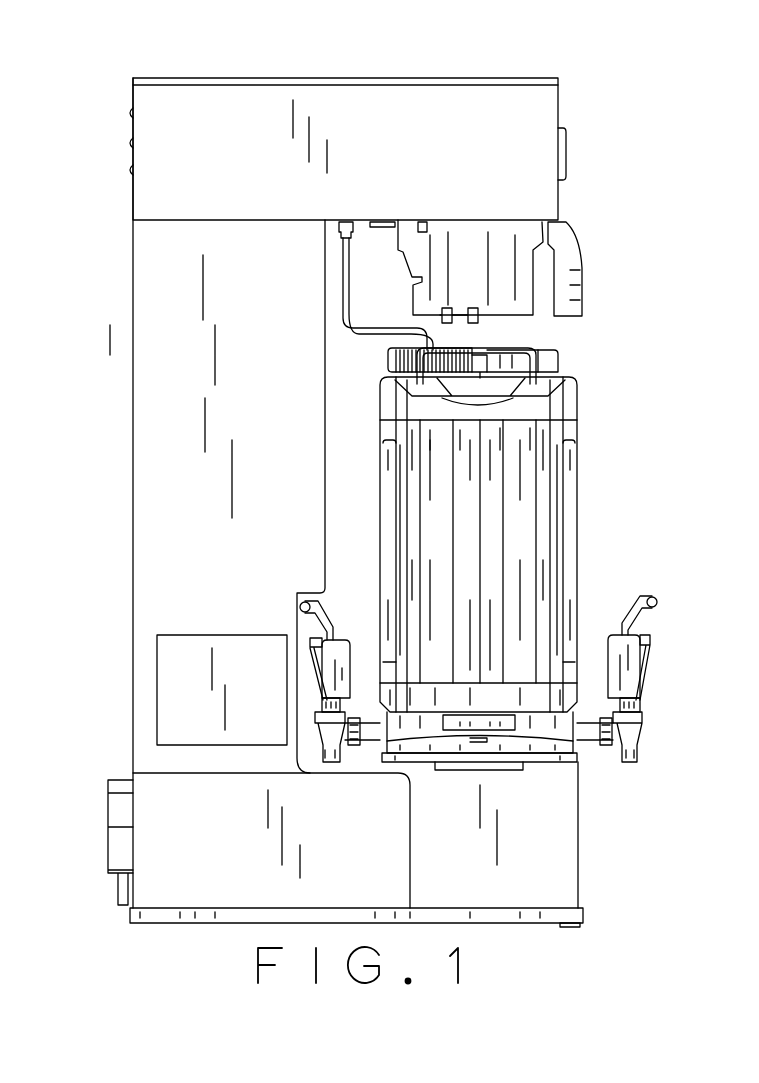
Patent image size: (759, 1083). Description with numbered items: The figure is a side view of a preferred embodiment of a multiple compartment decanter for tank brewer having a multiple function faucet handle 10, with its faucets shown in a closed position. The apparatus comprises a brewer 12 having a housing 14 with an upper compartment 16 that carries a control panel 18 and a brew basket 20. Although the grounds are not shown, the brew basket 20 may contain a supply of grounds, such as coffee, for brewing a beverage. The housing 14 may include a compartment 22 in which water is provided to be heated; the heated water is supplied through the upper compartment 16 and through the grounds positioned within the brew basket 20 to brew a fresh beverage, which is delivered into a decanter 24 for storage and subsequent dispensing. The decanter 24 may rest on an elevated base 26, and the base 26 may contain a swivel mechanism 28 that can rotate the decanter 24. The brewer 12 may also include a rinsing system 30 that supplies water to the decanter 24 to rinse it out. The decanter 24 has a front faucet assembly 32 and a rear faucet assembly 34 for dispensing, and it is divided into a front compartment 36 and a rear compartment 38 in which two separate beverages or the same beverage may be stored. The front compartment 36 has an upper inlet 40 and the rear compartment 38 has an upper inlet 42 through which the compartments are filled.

The multiple compartment decanter for tank brewer having a multiple function faucet 10 is at (620, 308).
The brewer 12 is at (591, 181).
The housing 14 is at (168, 396).
The upper compartment 16 is at (153, 170).
The control panel 18 is at (567, 148).
The brew basket 20 is at (505, 257).
The compartment 22 is at (158, 572).
The decanter 24 is at (600, 468).
The elevated base 26 is at (551, 824).
The swivel mechanism 28 is at (507, 744).
The rinsing system 30 is at (348, 359).
The front faucet assembly 32 is at (644, 578).
The rear faucet assembly 34 is at (345, 599).
The front compartment 36 is at (528, 552).
The rear compartment 38 is at (420, 520).
The upper inlet 40 is at (545, 366).
The upper inlet 42 is at (388, 360).